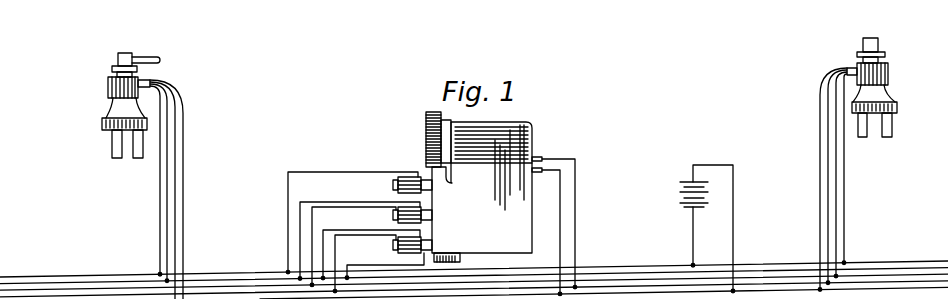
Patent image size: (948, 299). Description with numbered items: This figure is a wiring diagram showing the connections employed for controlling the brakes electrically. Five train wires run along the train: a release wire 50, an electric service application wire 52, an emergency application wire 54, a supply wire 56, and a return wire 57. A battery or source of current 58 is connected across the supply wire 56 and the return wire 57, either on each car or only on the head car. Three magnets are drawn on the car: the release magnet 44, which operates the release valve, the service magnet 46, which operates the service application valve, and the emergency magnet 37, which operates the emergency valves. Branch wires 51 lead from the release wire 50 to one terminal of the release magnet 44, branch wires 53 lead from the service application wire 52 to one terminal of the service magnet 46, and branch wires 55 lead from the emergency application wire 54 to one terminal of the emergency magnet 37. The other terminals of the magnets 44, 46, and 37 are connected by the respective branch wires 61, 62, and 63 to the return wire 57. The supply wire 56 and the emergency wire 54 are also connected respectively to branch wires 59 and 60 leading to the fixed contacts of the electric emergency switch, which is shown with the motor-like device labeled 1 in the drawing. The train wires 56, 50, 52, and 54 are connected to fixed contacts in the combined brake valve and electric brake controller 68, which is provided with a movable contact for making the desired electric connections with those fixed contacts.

The electromagnetic motor / relay device 1 is at (533, 143).
The emergency magnet 37 is at (418, 248).
The release magnet 44 is at (393, 186).
The service magnet 46 is at (393, 216).
The release wire 50 is at (196, 276).
The branch wires 51 is at (288, 213).
The electric service application wire 52 is at (233, 286).
The branch wires 53 is at (319, 205).
The emergency application wire 54 is at (66, 298).
The branch wires 55 is at (339, 236).
The supply wire 56 is at (588, 293).
The return wire 57 is at (645, 275).
The battery 58 is at (680, 192).
The branch wire 59 is at (561, 232).
The branch wire 60 is at (579, 213).
The branch wire 61 is at (318, 204).
The branch wire 62 is at (323, 243).
The branch wire 63 is at (376, 266).
The combined brake valve and electric brake controller 68 is at (108, 93).